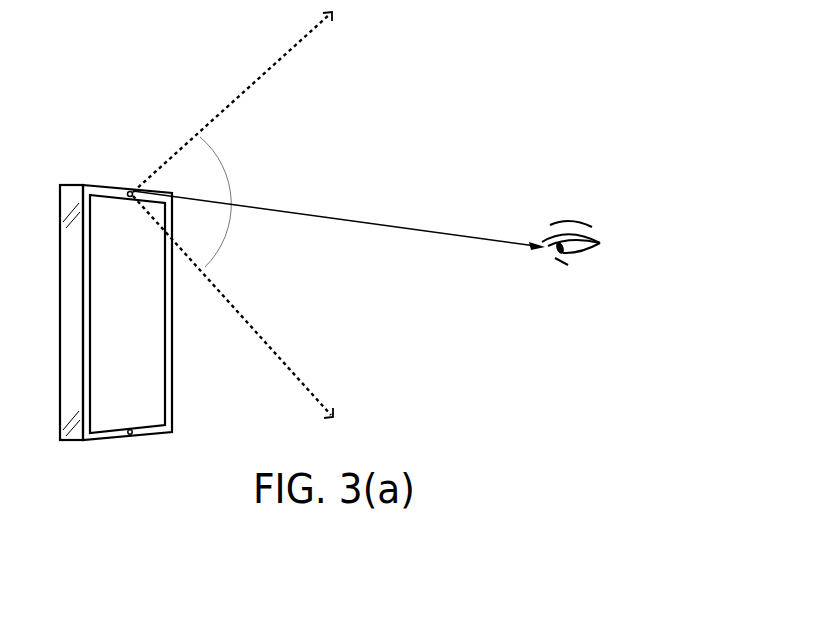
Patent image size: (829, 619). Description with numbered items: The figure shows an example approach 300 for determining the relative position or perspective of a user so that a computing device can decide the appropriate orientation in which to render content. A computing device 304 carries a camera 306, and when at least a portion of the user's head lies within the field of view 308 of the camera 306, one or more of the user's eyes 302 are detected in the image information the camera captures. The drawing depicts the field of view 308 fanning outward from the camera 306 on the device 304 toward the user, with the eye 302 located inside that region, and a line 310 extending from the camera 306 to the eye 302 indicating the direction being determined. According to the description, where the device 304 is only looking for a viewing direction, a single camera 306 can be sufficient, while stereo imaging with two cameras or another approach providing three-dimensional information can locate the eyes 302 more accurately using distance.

The viewing environment / system 300 is at (695, 86).
The user's eyes 302 is at (615, 233).
The computing device 304 is at (100, 185).
The camera 306 is at (134, 191).
The field of view 308 is at (208, 125).
The line of sight / viewing direction 310 is at (403, 228).